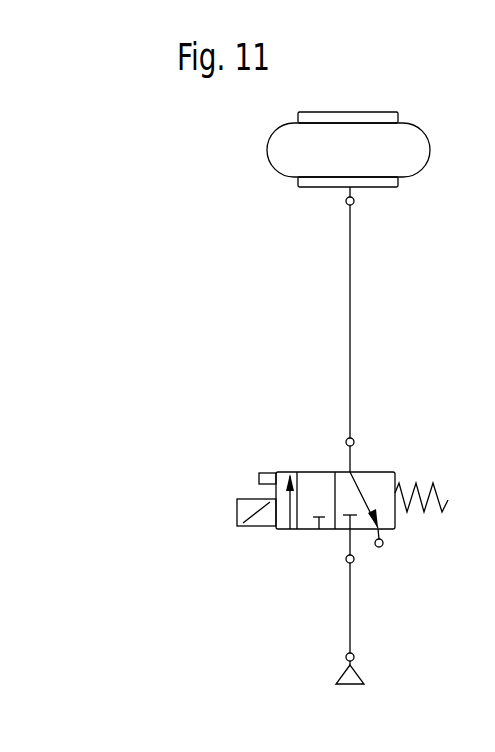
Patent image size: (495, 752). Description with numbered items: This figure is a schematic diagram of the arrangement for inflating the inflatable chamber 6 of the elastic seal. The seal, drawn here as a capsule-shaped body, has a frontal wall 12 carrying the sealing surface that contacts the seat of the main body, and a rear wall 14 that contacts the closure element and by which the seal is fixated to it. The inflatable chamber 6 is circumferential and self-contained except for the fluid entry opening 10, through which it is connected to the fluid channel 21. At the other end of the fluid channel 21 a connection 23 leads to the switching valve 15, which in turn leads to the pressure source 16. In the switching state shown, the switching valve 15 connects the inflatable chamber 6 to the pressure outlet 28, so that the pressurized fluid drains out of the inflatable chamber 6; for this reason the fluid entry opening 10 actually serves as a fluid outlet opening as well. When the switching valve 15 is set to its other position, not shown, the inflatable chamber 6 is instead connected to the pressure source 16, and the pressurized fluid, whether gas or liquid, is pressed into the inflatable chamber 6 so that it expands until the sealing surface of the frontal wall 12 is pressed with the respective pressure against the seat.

The inflatable chamber 6 is at (405, 143).
The frontal wall 12 is at (370, 117).
The rear wall 14 is at (377, 183).
The fluid entry opening 10 is at (353, 203).
The fluid channel 21 is at (350, 285).
The connection 23 is at (344, 441).
The switching valve 15 is at (382, 466).
The pressure outlet 28 is at (382, 547).
The pressure source 16 is at (358, 676).